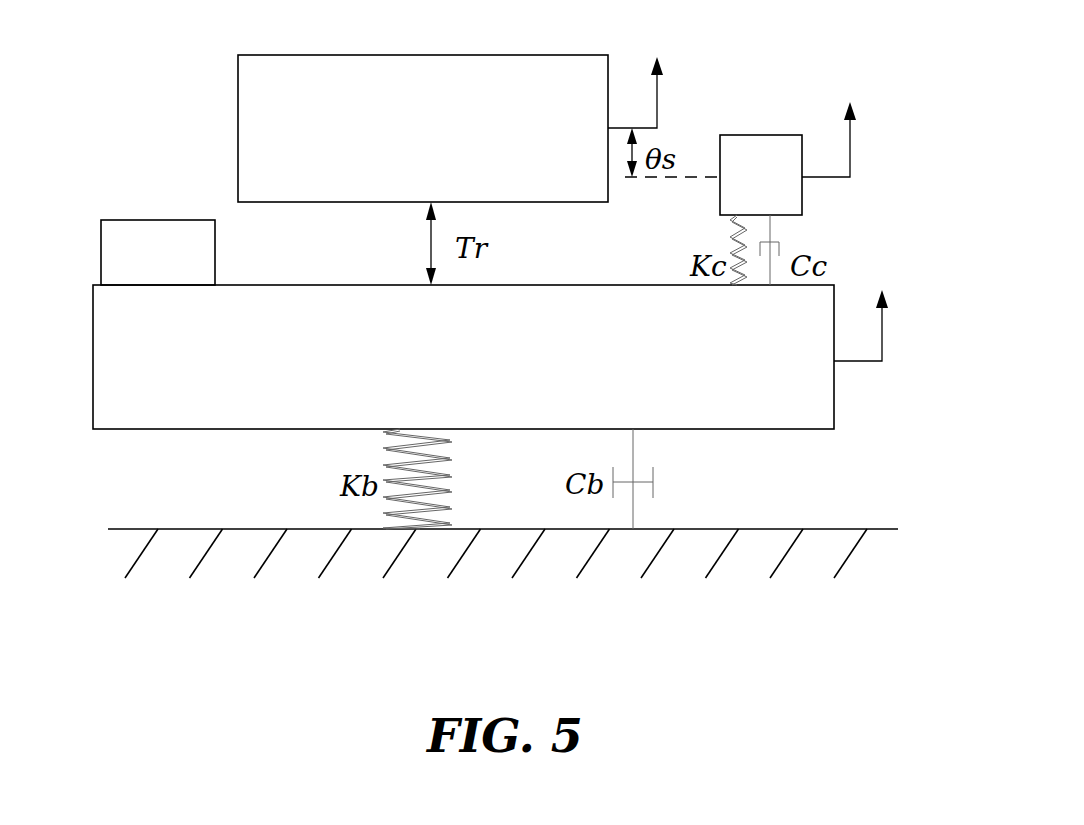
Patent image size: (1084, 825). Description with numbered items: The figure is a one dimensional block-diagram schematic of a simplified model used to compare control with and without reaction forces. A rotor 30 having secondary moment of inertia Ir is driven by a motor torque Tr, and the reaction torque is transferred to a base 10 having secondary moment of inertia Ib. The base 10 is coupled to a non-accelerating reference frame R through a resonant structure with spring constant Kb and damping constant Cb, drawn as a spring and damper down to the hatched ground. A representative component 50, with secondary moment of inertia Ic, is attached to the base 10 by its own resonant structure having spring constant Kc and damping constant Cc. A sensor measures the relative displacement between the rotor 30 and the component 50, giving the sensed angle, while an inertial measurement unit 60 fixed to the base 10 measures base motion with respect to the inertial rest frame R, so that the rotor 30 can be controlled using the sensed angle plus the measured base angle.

The base 10 is at (238, 429).
The rotor 30 is at (253, 56).
The component 50 is at (768, 135).
The inertial measurement unit (IMU) 60 is at (174, 220).
The non-accelerating reference frame R is at (291, 570).